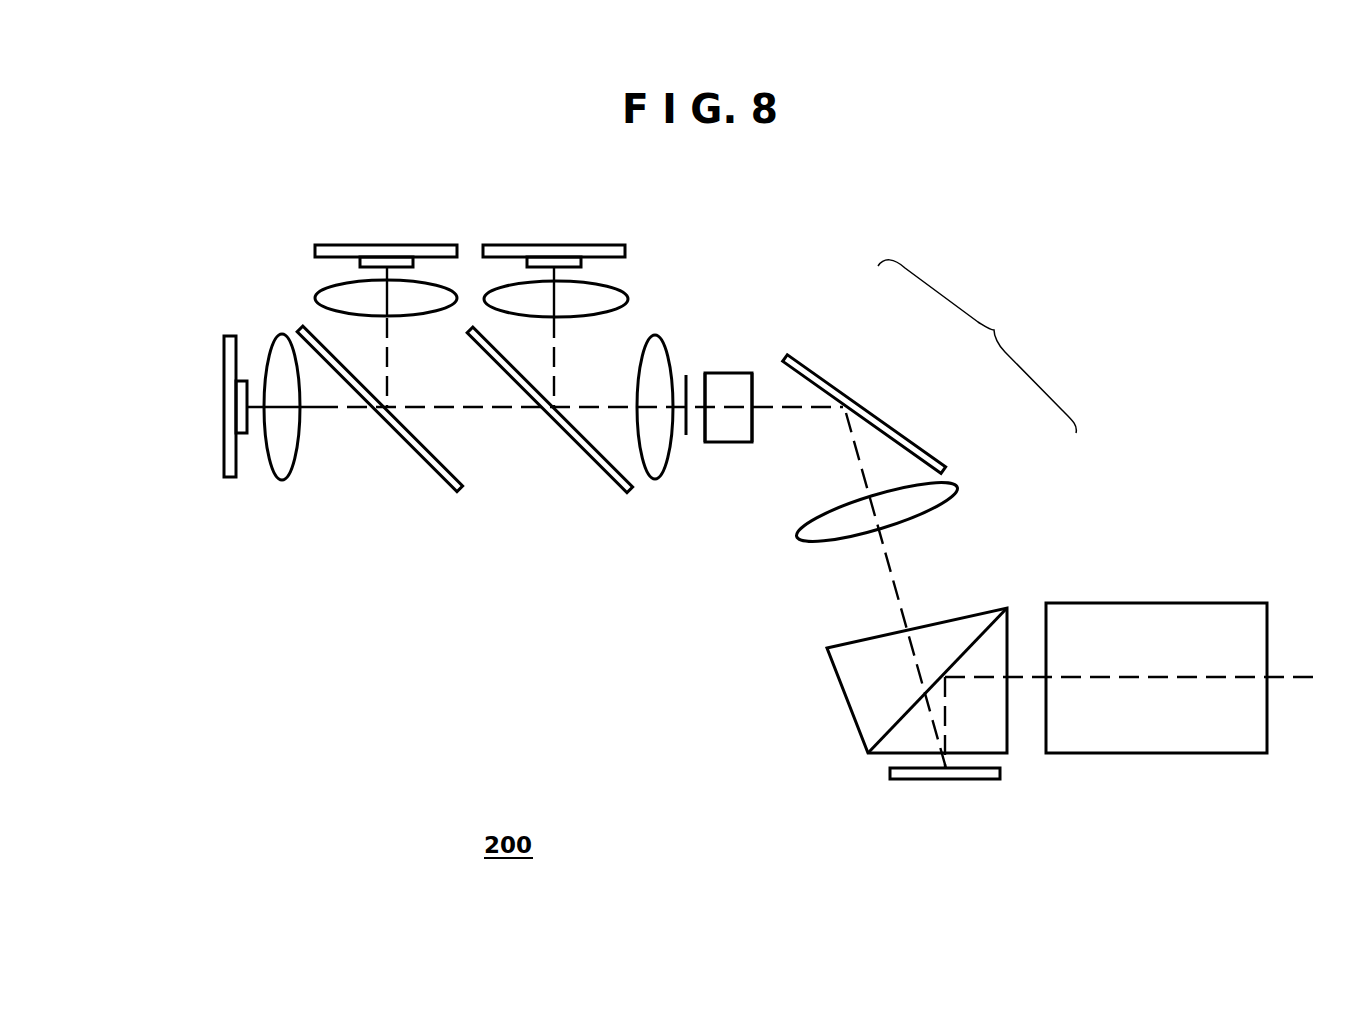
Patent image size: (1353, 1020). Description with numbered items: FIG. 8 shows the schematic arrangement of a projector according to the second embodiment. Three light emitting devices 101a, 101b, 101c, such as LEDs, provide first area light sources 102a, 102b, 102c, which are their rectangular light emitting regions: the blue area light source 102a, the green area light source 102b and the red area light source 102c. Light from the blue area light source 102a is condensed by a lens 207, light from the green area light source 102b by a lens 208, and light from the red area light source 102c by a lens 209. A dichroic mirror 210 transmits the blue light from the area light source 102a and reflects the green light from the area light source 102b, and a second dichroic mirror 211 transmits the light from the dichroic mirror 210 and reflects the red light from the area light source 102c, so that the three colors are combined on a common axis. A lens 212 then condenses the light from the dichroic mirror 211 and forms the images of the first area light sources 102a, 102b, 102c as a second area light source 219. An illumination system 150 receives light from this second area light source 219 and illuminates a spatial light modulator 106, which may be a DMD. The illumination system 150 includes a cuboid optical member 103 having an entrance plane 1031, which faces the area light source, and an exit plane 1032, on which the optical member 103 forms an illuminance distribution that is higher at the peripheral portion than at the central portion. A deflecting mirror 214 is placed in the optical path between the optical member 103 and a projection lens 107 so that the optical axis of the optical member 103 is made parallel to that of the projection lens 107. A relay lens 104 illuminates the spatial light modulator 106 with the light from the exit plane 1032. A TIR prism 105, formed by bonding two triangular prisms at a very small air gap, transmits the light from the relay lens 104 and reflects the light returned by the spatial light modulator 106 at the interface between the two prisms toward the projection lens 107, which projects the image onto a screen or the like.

The light emitting device 101a is at (223, 456).
The light emitting device 101b is at (353, 250).
The light emitting device 101c is at (512, 250).
The blue area light source 102a is at (250, 433).
The green area light source 102b is at (360, 265).
The red area light source 102c is at (582, 259).
The lens 207 is at (294, 455).
The lens 208 is at (316, 300).
The lens 209 is at (622, 306).
The dichroic mirror 210 is at (437, 478).
The dichroic mirror 211 is at (607, 478).
The lens 212 is at (654, 480).
The second area light source 219 is at (692, 377).
The optical member 103 is at (735, 373).
The entrance plane 1031 is at (700, 440).
The exit plane 1032 is at (752, 428).
The deflecting mirror 214 is at (893, 423).
The relay lens 104 is at (960, 490).
The illumination system 150 is at (977, 346).
The TIR prism 105 is at (838, 680).
The spatial light modulator 106 is at (927, 779).
The projection lens 107 is at (1156, 603).